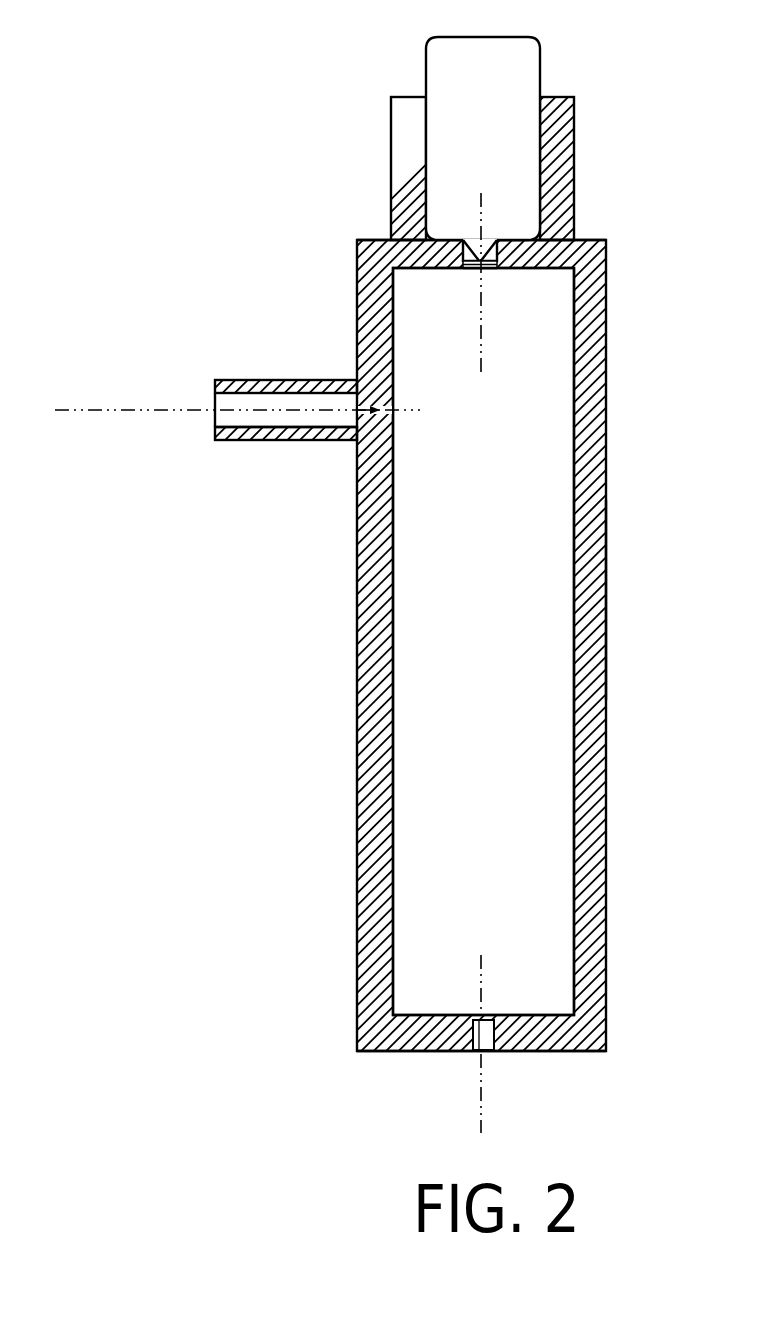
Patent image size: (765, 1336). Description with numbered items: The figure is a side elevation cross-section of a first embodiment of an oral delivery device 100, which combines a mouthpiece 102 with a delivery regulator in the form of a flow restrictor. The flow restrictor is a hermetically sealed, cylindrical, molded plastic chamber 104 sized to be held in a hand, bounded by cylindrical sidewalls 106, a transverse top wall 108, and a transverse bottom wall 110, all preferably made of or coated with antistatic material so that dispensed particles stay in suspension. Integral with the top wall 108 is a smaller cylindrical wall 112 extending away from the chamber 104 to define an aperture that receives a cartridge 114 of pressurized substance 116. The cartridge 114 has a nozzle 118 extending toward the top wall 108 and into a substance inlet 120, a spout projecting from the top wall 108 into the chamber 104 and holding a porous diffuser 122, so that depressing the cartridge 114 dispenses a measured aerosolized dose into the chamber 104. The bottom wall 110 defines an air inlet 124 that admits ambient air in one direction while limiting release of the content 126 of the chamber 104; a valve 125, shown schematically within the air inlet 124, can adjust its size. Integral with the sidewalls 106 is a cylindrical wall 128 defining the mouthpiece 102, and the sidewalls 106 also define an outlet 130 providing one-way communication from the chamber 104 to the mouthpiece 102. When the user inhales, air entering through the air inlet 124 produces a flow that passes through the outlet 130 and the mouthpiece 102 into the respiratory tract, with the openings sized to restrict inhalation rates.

The oral delivery device 100 is at (215, 255).
The mouthpiece 102 is at (268, 380).
The chamber 104 is at (605, 486).
The cylindrical sidewalls 106 is at (597, 584).
The transverse top wall 108 is at (592, 243).
The transverse bottom wall 110 is at (555, 1040).
The cylindrical wall 112 is at (391, 172).
The cartridge 114 is at (546, 48).
The pressurized substance 116 is at (483, 140).
The nozzle 118 is at (480, 250).
The substance inlet 120 is at (465, 270).
The diffuser 122 is at (498, 270).
The air inlet 124 is at (485, 1028).
The valve 125 is at (472, 1048).
The content 126 is at (483, 641).
The cylindrical wall 128 is at (258, 435).
The outlet 130 is at (378, 410).